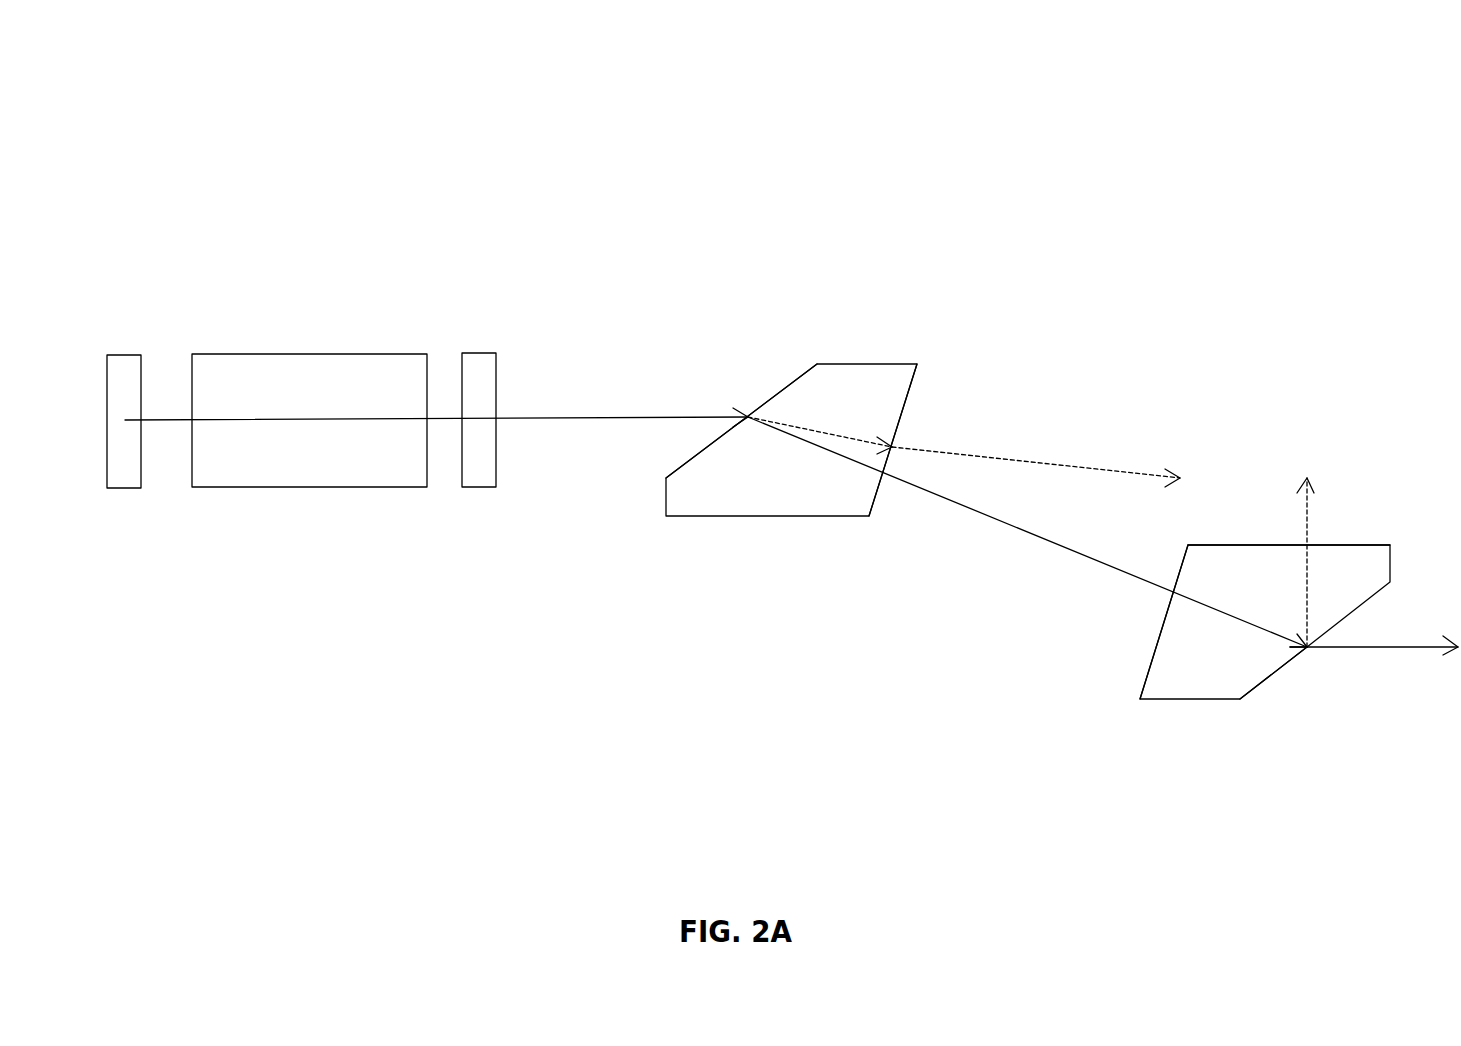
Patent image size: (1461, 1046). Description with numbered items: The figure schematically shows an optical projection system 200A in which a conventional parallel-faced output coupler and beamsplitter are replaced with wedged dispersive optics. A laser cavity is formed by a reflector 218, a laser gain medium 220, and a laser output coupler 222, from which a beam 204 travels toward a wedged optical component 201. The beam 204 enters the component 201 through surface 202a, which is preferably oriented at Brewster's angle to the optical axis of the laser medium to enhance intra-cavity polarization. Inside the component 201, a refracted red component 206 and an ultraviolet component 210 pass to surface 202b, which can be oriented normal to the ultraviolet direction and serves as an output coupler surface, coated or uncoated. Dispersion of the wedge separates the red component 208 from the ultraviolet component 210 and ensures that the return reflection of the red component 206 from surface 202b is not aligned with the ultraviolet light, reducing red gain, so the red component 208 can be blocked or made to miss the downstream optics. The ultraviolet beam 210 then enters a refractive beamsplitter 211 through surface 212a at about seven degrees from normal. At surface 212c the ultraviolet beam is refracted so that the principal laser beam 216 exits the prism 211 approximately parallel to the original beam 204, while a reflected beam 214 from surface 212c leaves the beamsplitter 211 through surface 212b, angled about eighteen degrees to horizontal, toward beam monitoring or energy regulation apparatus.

The optical projection system 200A is at (782, 374).
The reflector 218 is at (148, 447).
The laser gain medium 220 is at (309, 389).
The laser output coupler 222 is at (440, 389).
The beam 204 is at (436, 390).
The wedged optical component 201 is at (791, 440).
The entrance surface 202a is at (741, 400).
The output coupler surface 202b is at (927, 430).
The refracted red component 206 is at (820, 416).
The red component 208 is at (1036, 451).
The ultraviolet component 210 is at (1027, 532).
The refractive beamsplitter 211 is at (1265, 622).
The entrance surface of beamsplitter 212a is at (1123, 622).
The exit surface for reflected beam 212b is at (1289, 513).
The refracting surface 212c is at (1307, 693).
The reflected beam 214 is at (1335, 549).
The principal laser beam 216 is at (1375, 624).